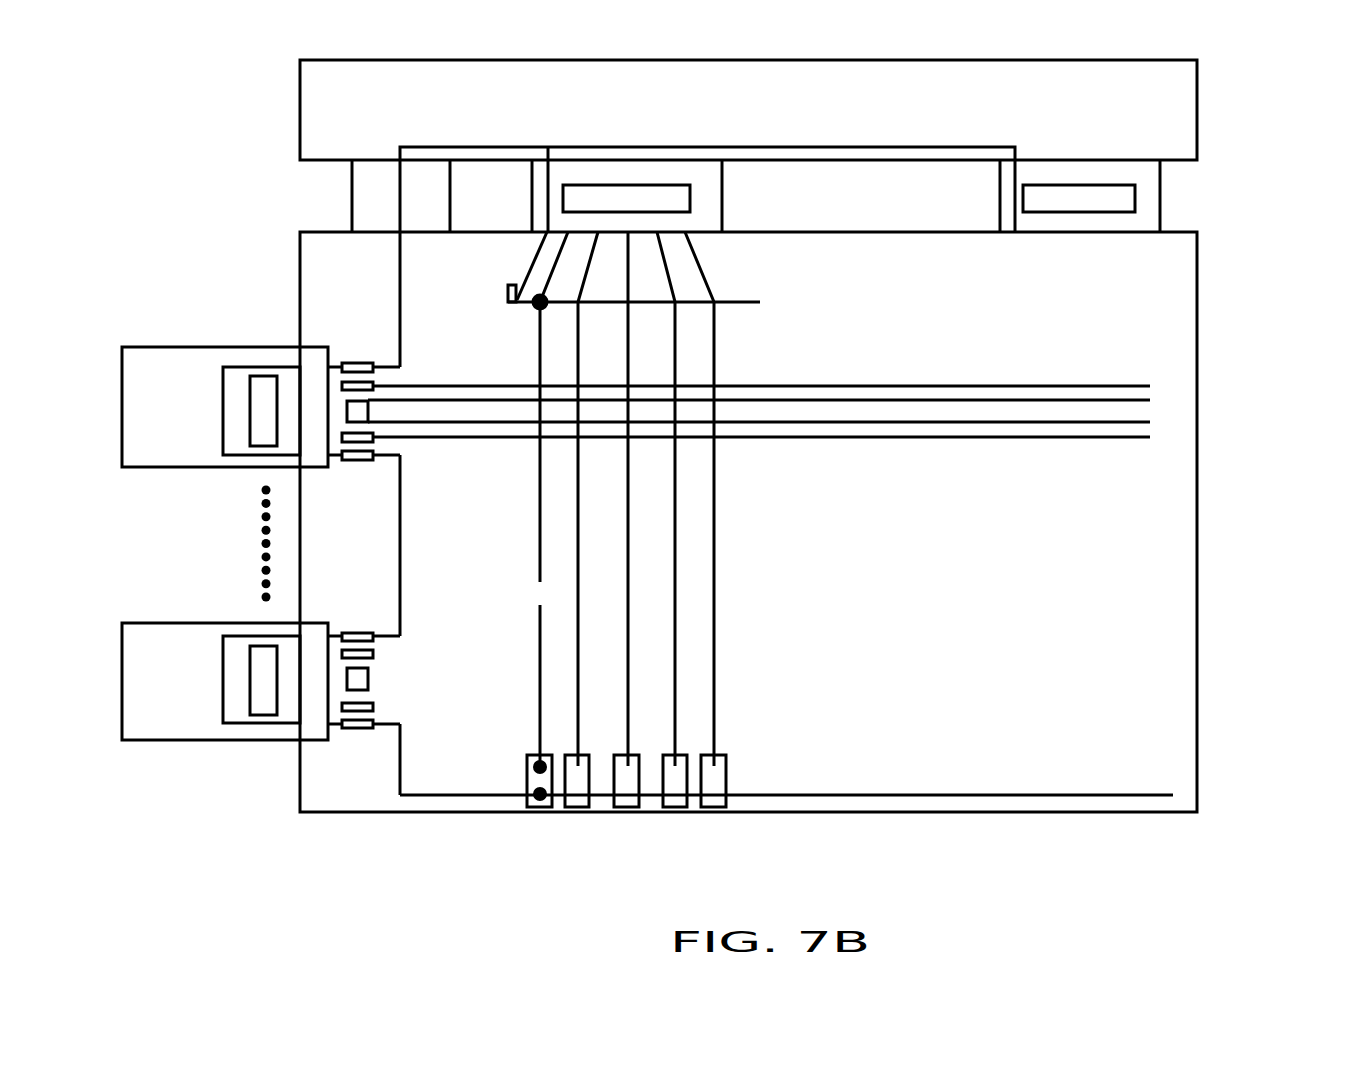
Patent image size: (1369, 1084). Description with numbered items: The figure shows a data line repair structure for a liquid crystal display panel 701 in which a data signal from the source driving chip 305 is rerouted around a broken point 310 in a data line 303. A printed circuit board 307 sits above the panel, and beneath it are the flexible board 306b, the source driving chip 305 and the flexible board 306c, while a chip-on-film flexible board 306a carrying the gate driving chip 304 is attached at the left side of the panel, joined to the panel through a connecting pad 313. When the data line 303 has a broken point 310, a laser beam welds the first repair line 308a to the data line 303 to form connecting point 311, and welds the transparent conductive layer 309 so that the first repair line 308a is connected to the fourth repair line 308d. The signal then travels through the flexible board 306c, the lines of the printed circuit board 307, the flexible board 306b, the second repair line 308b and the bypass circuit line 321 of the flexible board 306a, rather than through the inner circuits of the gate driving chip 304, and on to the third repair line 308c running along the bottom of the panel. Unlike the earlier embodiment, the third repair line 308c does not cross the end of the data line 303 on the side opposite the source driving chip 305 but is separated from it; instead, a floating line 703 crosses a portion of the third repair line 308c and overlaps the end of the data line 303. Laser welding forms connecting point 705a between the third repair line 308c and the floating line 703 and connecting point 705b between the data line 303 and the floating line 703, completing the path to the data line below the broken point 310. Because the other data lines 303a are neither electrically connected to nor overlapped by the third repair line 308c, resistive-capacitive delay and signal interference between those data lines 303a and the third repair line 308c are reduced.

The printed circuit board 307 is at (1198, 112).
The liquid crystal display panel 701 is at (1228, 362).
The flexible board 306a is at (160, 347).
The flexible board 306b is at (352, 187).
The flexible board 306c is at (723, 168).
The source driving chip 305 is at (703, 193).
The first repair line 308a is at (760, 302).
The second repair line 308b is at (398, 260).
The third repair line 308c is at (1108, 794).
The fourth repair line 308d is at (530, 262).
The transparent conductive layer 309 is at (508, 291).
The connecting point 311 is at (528, 308).
The data line 303 is at (540, 335).
The data lines 303a is at (578, 552).
The connecting pad 313 is at (357, 363).
The gate driving chip 304 is at (263, 377).
The bypass circuit line 321 is at (223, 410).
The broken point 310 is at (535, 593).
The floating line 703 is at (552, 807).
The connecting point 705a is at (527, 795).
The connecting point 705b is at (527, 765).